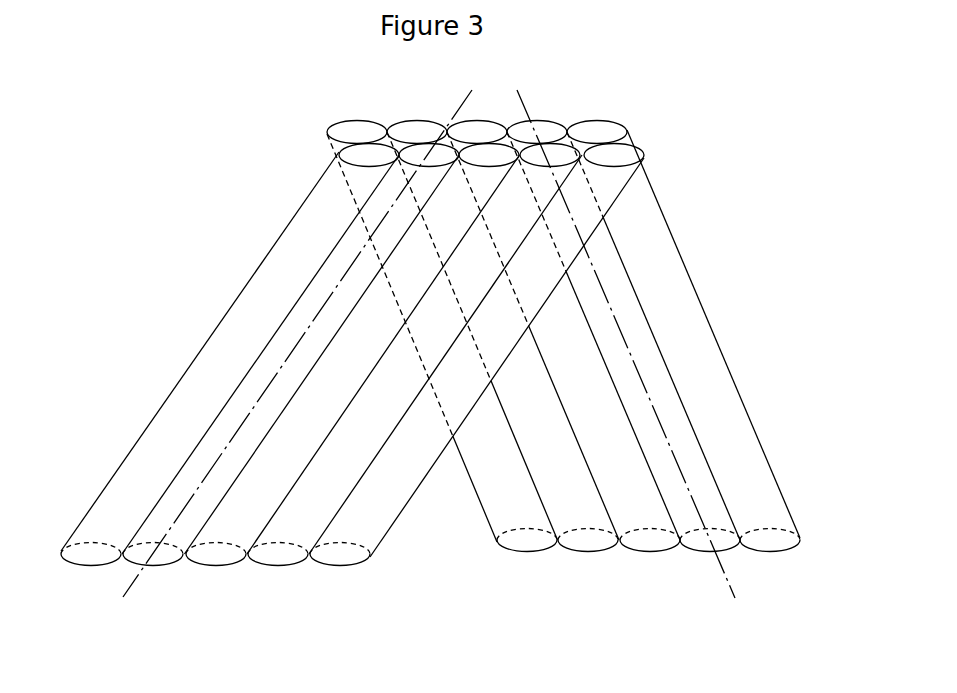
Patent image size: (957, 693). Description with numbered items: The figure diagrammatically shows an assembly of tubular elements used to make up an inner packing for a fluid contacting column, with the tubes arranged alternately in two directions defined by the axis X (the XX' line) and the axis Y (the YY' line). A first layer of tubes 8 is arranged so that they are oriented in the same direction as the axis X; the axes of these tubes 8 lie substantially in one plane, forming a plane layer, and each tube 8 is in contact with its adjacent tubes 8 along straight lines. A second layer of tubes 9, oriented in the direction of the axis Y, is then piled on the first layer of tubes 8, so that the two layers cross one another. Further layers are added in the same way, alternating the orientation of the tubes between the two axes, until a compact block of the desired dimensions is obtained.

The tubes of the first layer 8 is at (88, 567).
The tubes of the second layer 9 is at (530, 553).
The axis XX' X is at (291, 350).
The axis YY' Y is at (631, 353).